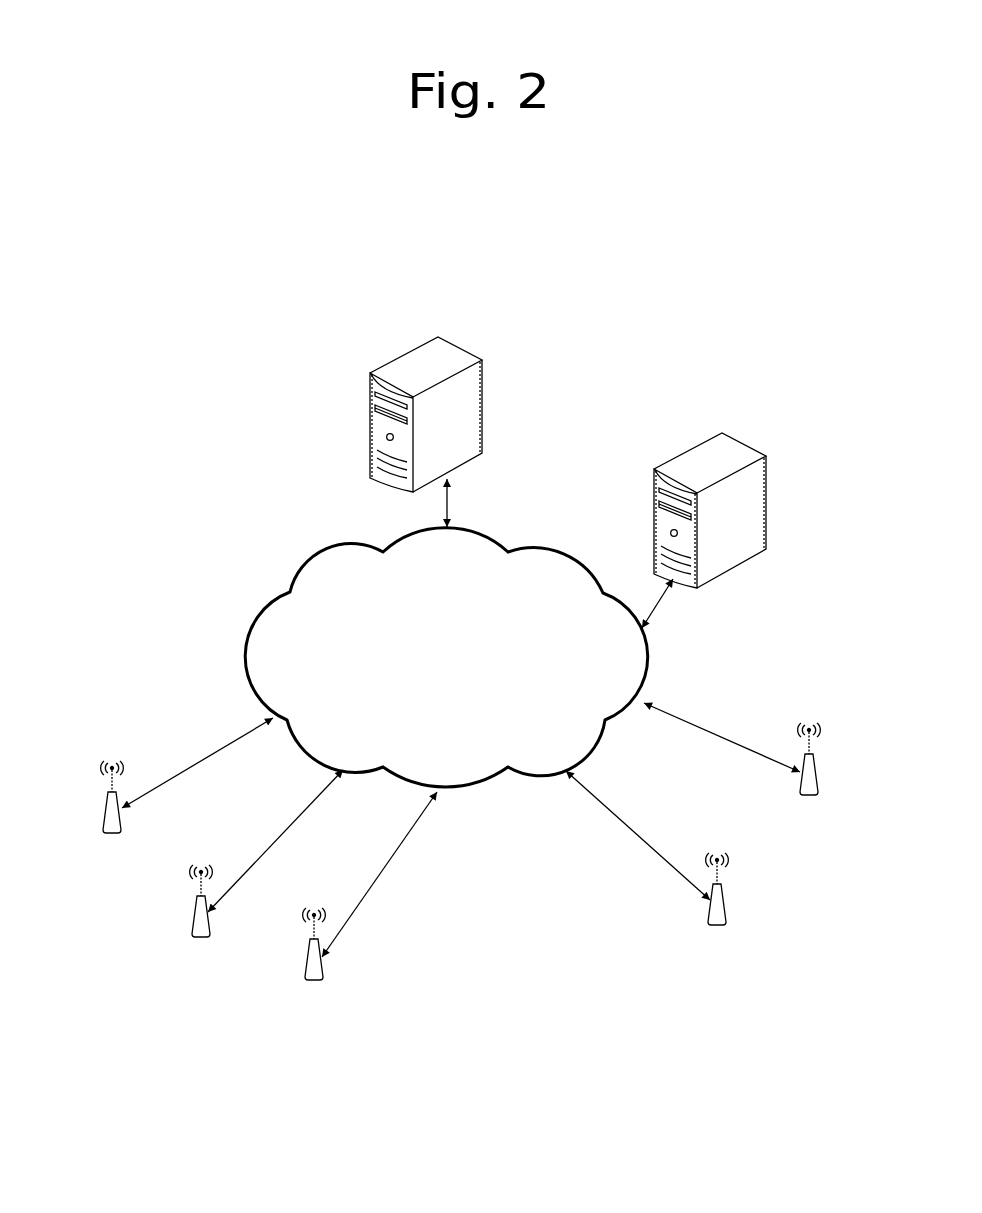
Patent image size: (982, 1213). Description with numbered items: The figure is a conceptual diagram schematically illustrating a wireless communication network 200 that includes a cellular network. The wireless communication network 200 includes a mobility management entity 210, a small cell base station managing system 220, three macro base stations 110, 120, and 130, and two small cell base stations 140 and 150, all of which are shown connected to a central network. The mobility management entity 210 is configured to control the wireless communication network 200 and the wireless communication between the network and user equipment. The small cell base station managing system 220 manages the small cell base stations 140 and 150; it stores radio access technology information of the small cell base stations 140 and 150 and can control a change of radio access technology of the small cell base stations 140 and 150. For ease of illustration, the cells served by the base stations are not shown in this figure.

The wireless communication network 200 is at (792, 264).
The mobility management entity 210 is at (452, 353).
The small cell base station managing system 220 is at (720, 487).
The macro base station 110 is at (113, 832).
The macro base station 120 is at (202, 936).
The macro base station 130 is at (315, 979).
The small cell base station 140 is at (718, 924).
The small cell base station 150 is at (810, 794).